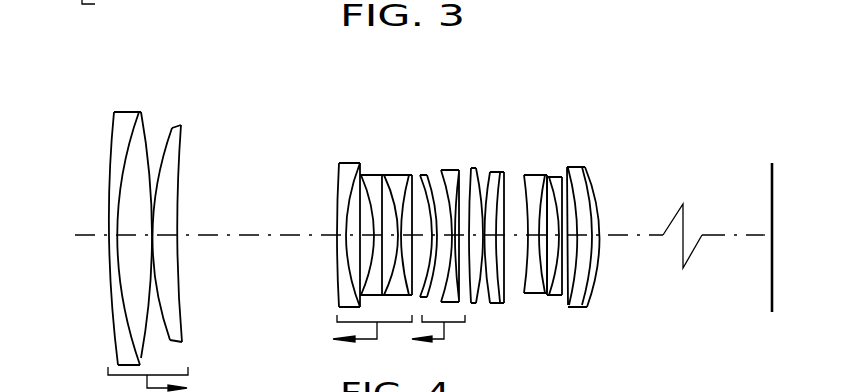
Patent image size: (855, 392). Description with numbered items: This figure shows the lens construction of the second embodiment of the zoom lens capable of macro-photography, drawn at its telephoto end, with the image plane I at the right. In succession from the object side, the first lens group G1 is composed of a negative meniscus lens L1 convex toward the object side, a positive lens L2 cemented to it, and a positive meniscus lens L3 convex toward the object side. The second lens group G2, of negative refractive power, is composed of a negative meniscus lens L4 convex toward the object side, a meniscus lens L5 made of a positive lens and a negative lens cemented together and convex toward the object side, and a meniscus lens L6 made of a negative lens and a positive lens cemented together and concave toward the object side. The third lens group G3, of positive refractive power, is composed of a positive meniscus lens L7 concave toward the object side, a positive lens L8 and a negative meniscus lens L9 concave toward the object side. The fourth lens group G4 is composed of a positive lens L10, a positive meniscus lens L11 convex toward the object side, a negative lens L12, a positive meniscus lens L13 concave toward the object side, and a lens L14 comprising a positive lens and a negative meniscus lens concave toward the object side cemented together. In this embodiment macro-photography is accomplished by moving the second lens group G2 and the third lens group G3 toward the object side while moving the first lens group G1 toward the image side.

The first lens group G1 is at (218, 73).
The second lens group G2 is at (417, 131).
The third lens group G3 is at (515, 80).
The fourth lens group G4 is at (683, 119).
The negative meniscus lens L1 is at (125, 112).
The positive lens L2 is at (140, 127).
The positive meniscus lens L3 is at (175, 130).
The negative meniscus lens L4 is at (352, 170).
The meniscus lens L5 is at (372, 174).
The meniscus lens L6 is at (402, 174).
The positive meniscus lens L7 is at (421, 174).
The positive lens L8 is at (442, 173).
The negative meniscus lens L9 is at (475, 167).
The positive lens L10 is at (492, 171).
The positive meniscus lens L11 is at (530, 174).
The negative lens L12 is at (555, 176).
The positive meniscus lens L13 is at (570, 166).
The cemented lens L14 is at (590, 165).
The image plane I is at (772, 178).